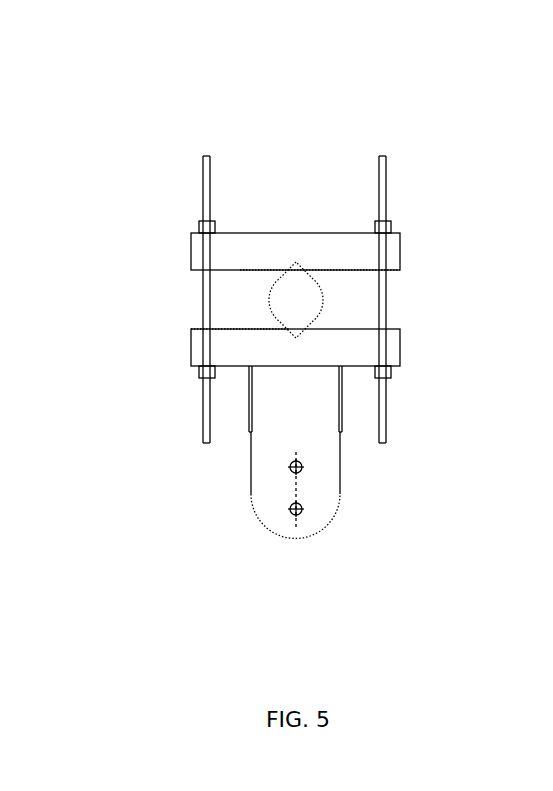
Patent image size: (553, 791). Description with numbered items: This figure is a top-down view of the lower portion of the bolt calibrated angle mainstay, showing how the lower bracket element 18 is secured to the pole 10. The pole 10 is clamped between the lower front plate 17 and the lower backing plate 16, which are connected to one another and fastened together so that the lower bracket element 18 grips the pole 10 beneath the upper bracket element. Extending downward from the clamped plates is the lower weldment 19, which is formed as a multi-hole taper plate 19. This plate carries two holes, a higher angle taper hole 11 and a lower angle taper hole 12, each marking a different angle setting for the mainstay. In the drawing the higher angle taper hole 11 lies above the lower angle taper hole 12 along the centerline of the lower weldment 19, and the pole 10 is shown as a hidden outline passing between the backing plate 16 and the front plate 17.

The lower bracket element 18 is at (283, 163).
The backing bracket 16 is at (197, 247).
The front plate 17 is at (187, 340).
The pole 10 is at (323, 290).
The higher angle taper hole 11 is at (300, 475).
The lower angle taper hole 12 is at (292, 511).
The lower weldment 19 is at (297, 530).